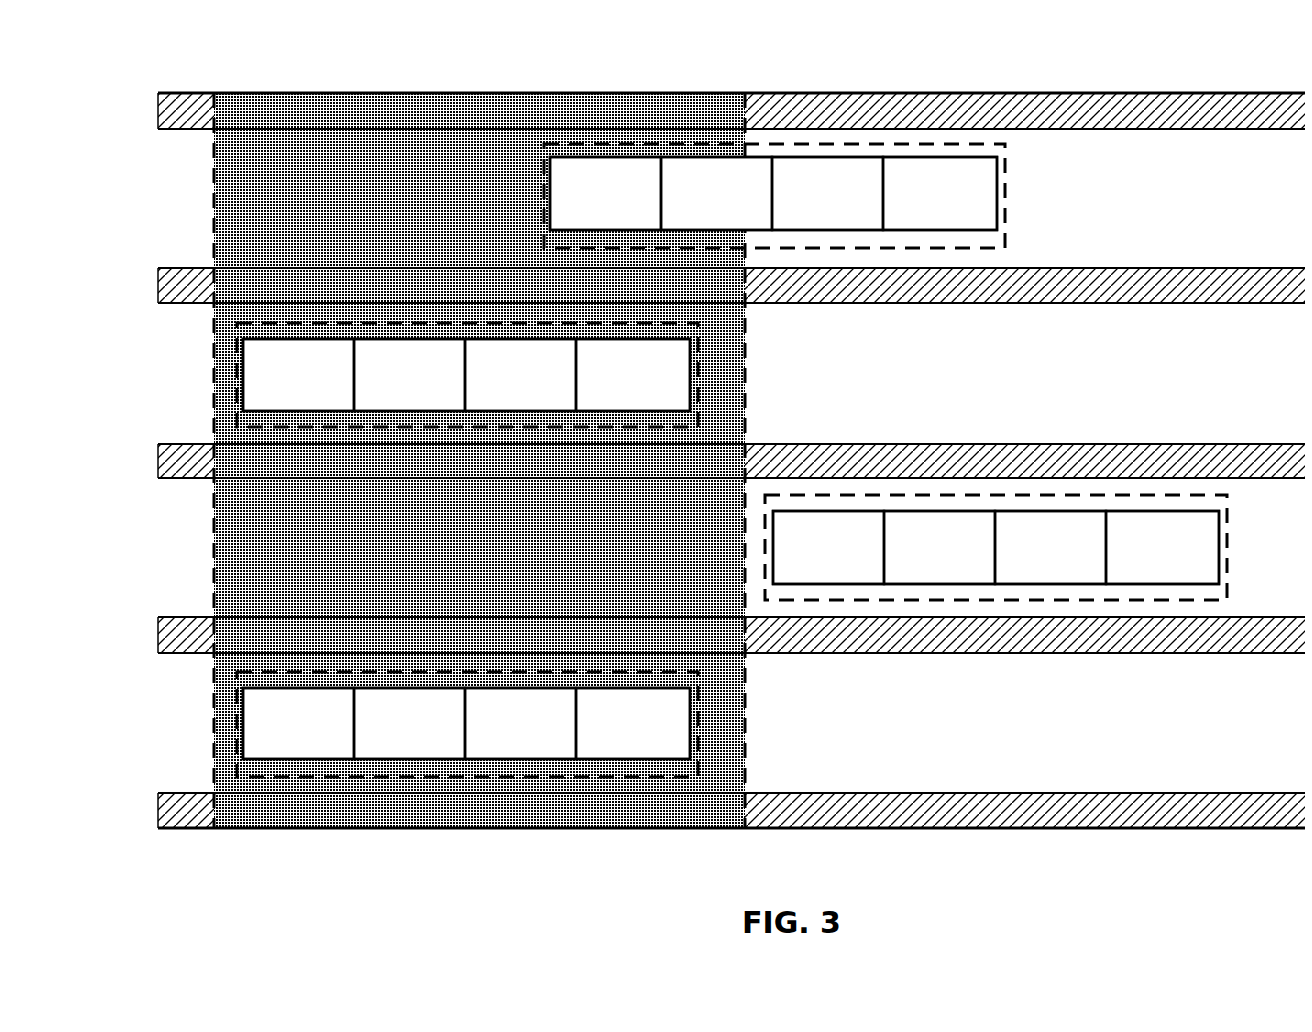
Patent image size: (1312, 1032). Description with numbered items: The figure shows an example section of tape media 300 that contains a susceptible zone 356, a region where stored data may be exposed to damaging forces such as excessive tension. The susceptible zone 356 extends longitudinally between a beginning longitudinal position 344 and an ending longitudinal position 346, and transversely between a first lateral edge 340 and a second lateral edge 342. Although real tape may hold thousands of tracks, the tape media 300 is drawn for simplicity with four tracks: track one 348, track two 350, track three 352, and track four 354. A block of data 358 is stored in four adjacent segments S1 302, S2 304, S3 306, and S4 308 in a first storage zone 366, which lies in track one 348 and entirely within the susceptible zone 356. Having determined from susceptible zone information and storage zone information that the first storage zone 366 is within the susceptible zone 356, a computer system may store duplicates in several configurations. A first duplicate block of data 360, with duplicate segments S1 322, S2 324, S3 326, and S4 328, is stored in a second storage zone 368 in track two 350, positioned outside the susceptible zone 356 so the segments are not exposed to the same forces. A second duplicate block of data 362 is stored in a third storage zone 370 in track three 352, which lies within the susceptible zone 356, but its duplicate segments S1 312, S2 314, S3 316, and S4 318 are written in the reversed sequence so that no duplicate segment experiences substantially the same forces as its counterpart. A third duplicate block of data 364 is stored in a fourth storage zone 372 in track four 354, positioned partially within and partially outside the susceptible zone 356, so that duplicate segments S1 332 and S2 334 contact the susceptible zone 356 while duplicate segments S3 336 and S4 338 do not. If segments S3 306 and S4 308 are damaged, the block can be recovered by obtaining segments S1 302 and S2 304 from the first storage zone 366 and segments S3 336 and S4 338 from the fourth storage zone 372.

The tape media 300 is at (160, 27).
The segment S1 302 is at (277, 749).
The segment S2 304 is at (388, 749).
The segment S3 306 is at (499, 749).
The segment S4 308 is at (633, 723).
The duplicate segment S1 312 is at (633, 375).
The duplicate segment S2 314 is at (499, 402).
The duplicate segment S3 316 is at (388, 402).
The duplicate segment S4 318 is at (277, 402).
The duplicate segment S1 322 is at (807, 574).
The duplicate segment S2 324 is at (918, 574).
The duplicate segment S3 326 is at (1029, 574).
The duplicate segment S4 328 is at (1162, 547).
The duplicate segment S1 332 is at (584, 220).
The duplicate segment S2 334 is at (695, 220).
The duplicate segment S3 336 is at (806, 220).
The duplicate segment S4 338 is at (940, 193).
The first lateral edge 340 is at (929, 830).
The second lateral edge 342 is at (937, 91).
The beginning longitudinal position 344 is at (214, 718).
The ending longitudinal position 346 is at (748, 769).
The track one 348 is at (1231, 734).
The track two 350 is at (1238, 558).
The track three 352 is at (1230, 389).
The track four 354 is at (1225, 222).
The susceptible zone 356 is at (383, 177).
The block of data 358 is at (532, 715).
The first duplicate block of data 360 is at (949, 541).
The second duplicate block of data 362 is at (531, 364).
The third duplicate block of data 364 is at (740, 183).
The first storage zone 366 is at (383, 672).
The second storage zone 368 is at (968, 495).
The third storage zone 370 is at (433, 323).
The fourth storage zone 372 is at (655, 145).